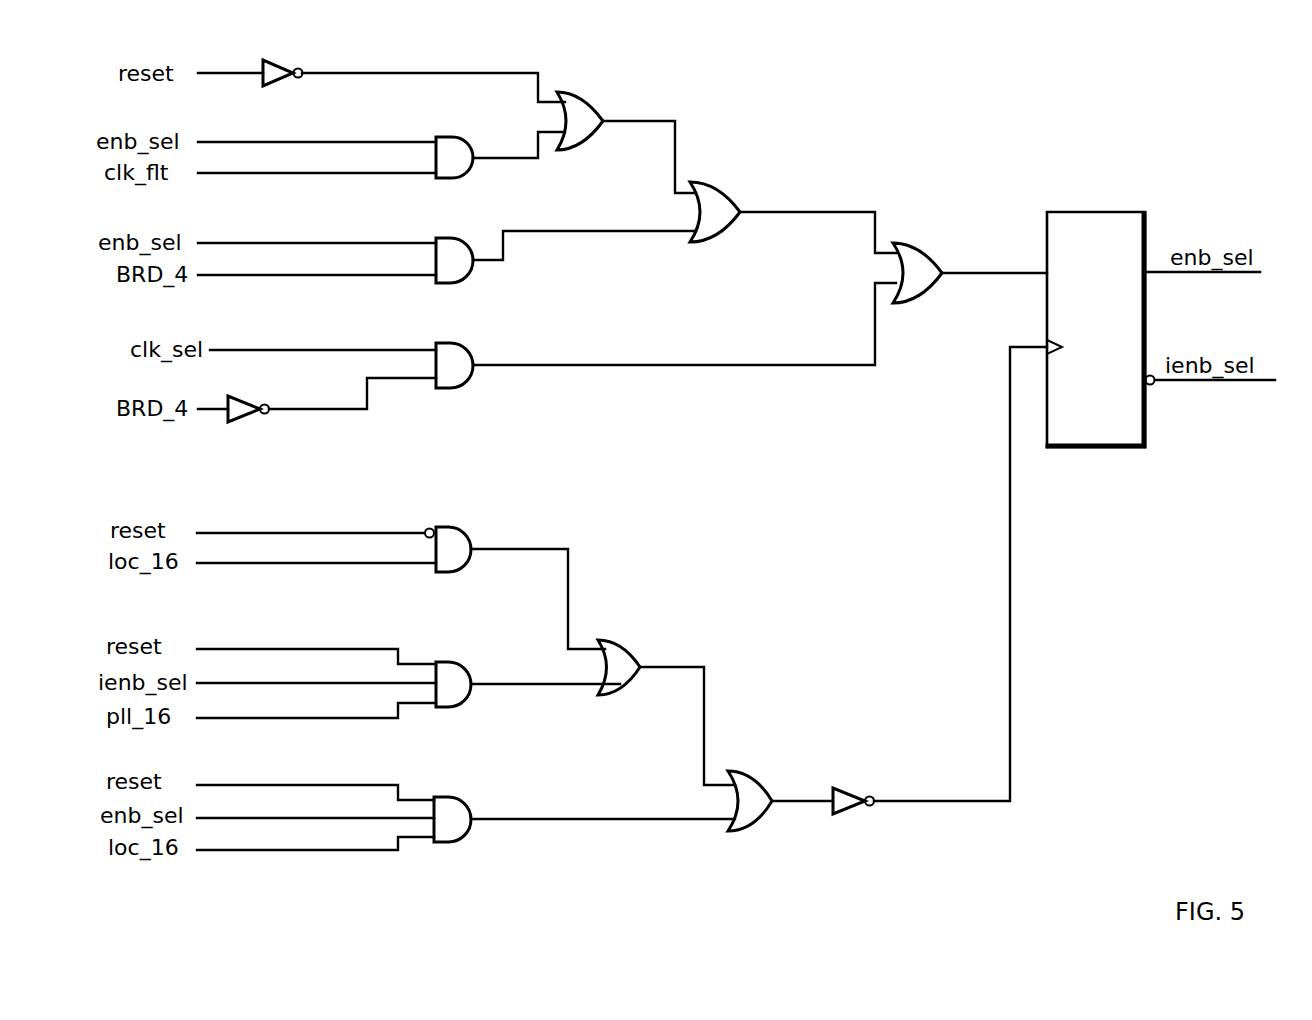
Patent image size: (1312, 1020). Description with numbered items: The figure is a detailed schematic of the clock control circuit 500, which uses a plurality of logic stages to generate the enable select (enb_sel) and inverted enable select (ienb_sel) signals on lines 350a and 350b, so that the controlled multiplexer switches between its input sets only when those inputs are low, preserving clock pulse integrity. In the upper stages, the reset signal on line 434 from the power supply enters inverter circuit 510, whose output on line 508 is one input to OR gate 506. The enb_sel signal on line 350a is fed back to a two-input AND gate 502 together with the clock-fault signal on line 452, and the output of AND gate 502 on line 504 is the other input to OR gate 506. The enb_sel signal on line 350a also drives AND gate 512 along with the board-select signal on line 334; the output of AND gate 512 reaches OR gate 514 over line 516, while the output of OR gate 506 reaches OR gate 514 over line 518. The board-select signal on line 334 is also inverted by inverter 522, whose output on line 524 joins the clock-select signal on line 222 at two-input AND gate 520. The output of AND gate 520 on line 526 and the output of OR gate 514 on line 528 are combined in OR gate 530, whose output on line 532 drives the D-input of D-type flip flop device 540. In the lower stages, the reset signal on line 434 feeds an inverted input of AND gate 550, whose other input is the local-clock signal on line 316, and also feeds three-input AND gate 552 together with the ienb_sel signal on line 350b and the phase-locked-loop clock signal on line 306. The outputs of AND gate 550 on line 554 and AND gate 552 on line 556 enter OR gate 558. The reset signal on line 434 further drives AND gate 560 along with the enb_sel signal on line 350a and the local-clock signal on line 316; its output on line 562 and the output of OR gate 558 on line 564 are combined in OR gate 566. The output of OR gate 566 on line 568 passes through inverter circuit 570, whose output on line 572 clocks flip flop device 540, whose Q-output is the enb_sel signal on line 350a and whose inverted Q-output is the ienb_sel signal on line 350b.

The clock control circuit 500 is at (1186, 76).
The reset signal line 434 is at (212, 73).
The inverter circuit 510 is at (290, 62).
The inverter output line 508 is at (407, 73).
The enb_sel signal line 350a is at (243, 142).
The clk_flt signal line 452 is at (236, 173).
The AND gate 502 is at (452, 137).
The AND gate output line 504 is at (503, 159).
The OR gate 506 is at (584, 102).
The OR gate output line 518 is at (661, 121).
The BRD_4 signal line 334 is at (274, 275).
The AND gate 512 is at (460, 210).
The AND gate output line 516 is at (594, 231).
The OR gate 514 is at (722, 186).
The OR gate output line 528 is at (803, 212).
The clk_sel signal line 222 is at (259, 350).
The inverter 522 is at (248, 423).
The inverter output line 524 is at (370, 392).
The AND gate 520 is at (462, 343).
The AND gate output line 526 is at (635, 365).
The OR gate 530 is at (922, 244).
The OR gate output line 532 is at (975, 274).
The D-type flip flop device 540 is at (1078, 212).
The ienb_sel signal line 350b is at (260, 683).
The loc_16 signal line 316 is at (254, 564).
The AND gate 550 is at (450, 527).
The AND gate output line 554 is at (530, 549).
The pll_16 signal line 306 is at (258, 718).
The AND gate 552 is at (452, 662).
The AND gate output line 556 is at (506, 685).
The OR gate 558 is at (631, 644).
The OR gate output line 564 is at (705, 690).
The AND gate 560 is at (459, 797).
The AND gate output line 562 is at (650, 820).
The OR gate 566 is at (757, 777).
The OR gate output line 568 is at (800, 802).
The inverter circuit 570 is at (855, 788).
The inverter output line 572 is at (1011, 714).